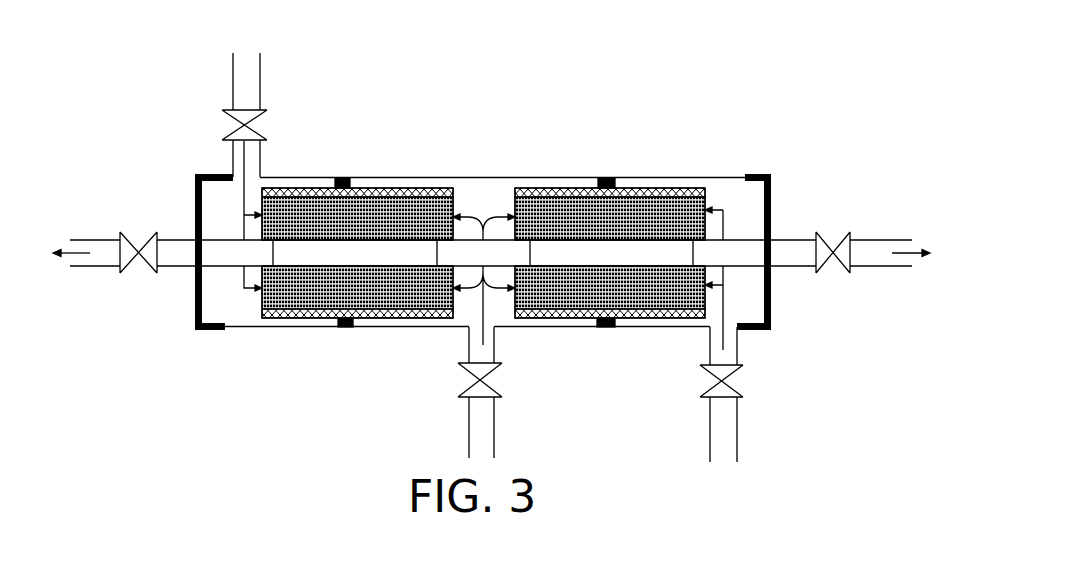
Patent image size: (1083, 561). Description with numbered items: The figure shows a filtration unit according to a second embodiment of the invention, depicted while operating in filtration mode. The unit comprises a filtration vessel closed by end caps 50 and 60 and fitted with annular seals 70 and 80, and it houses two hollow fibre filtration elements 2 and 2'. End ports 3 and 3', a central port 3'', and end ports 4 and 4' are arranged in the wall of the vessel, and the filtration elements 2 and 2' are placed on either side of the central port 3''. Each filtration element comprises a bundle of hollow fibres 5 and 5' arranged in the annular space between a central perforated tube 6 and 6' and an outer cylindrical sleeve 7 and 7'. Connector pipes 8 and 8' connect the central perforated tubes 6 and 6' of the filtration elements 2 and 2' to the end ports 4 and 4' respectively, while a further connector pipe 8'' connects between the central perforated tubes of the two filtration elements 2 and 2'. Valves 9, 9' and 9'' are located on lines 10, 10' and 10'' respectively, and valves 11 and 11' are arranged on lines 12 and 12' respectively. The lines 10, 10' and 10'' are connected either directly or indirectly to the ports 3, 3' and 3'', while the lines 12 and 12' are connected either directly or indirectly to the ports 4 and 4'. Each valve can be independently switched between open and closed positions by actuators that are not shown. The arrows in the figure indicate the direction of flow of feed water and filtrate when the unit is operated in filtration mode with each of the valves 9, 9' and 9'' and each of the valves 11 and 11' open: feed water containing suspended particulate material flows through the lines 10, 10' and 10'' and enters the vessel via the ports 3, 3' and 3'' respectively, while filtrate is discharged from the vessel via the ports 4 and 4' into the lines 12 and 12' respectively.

The hollow fibre filtration element 2 is at (364, 220).
The hollow fibre filtration element 2' is at (595, 232).
The end port 3 is at (266, 189).
The end port 3' is at (744, 351).
The central port 3'' is at (504, 350).
The end port 4 is at (276, 236).
The end port 4' is at (697, 272).
The bundle of hollow fibres 5 is at (357, 290).
The bundle of hollow fibres 5' is at (610, 216).
The central perforated tube 6 is at (355, 193).
The central perforated tube 6' is at (611, 193).
The outer cylindrical sleeve 7 is at (357, 286).
The outer cylindrical sleeve 7' is at (610, 219).
The connector pipe 8 is at (239, 265).
The connector pipe 8' is at (728, 270).
The connector pipe 8'' is at (519, 289).
The valve 9 is at (269, 130).
The valve 9' is at (698, 380).
The valve 9'' is at (454, 380).
The line 10 is at (273, 115).
The line 10' is at (757, 429).
The line 10'' is at (517, 427).
The valve 11 is at (136, 275).
The valve 11' is at (839, 228).
The line 12 is at (78, 220).
The line 12' is at (908, 219).
The end cap 50 is at (197, 177).
The end cap 60 is at (775, 177).
The annular seal 70 is at (340, 183).
The annular seal 80 is at (608, 180).